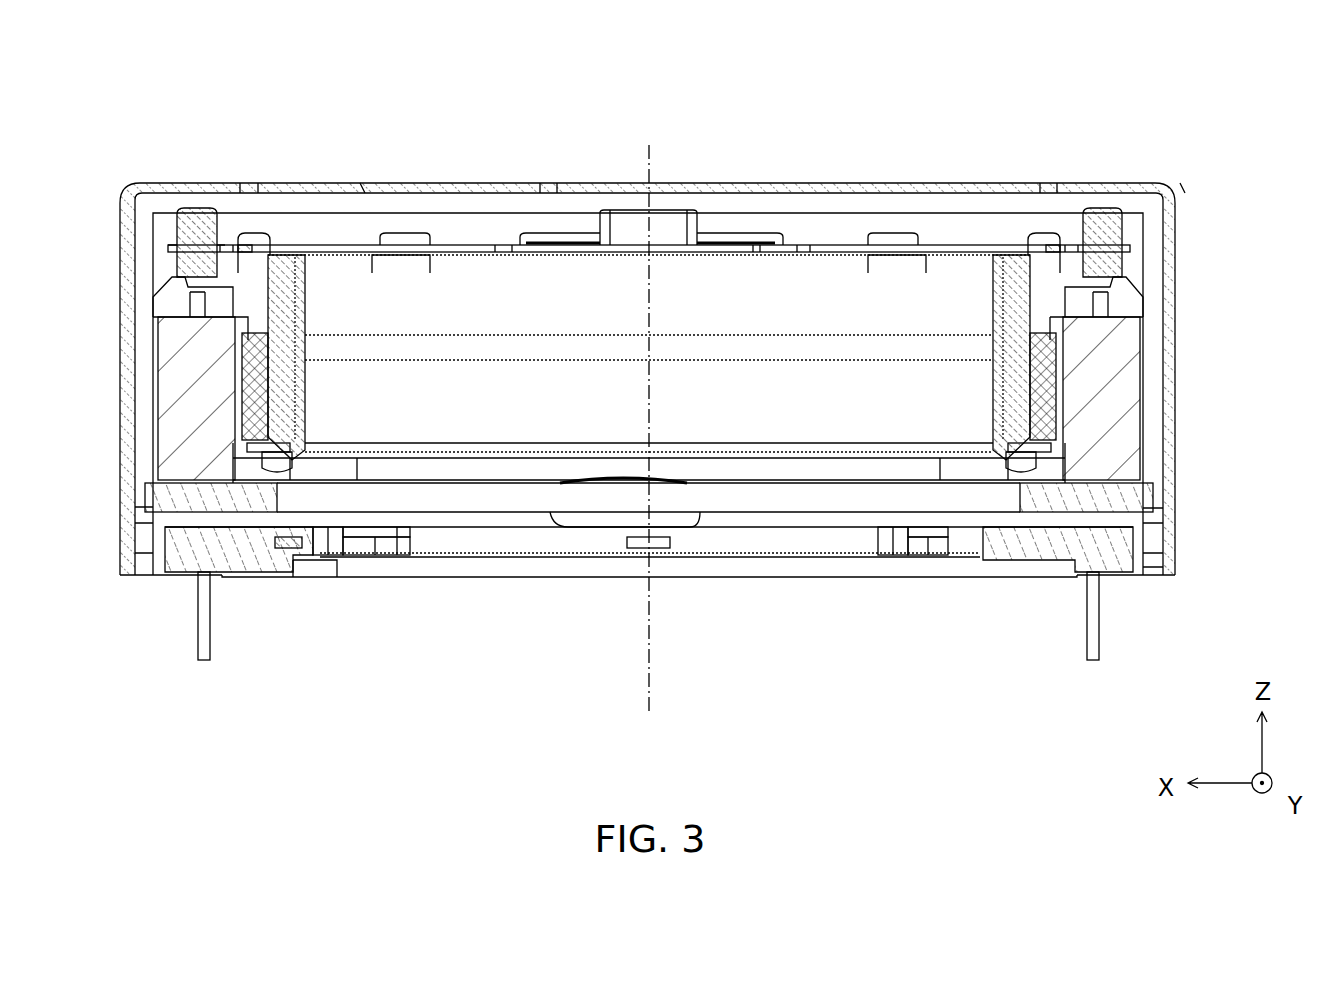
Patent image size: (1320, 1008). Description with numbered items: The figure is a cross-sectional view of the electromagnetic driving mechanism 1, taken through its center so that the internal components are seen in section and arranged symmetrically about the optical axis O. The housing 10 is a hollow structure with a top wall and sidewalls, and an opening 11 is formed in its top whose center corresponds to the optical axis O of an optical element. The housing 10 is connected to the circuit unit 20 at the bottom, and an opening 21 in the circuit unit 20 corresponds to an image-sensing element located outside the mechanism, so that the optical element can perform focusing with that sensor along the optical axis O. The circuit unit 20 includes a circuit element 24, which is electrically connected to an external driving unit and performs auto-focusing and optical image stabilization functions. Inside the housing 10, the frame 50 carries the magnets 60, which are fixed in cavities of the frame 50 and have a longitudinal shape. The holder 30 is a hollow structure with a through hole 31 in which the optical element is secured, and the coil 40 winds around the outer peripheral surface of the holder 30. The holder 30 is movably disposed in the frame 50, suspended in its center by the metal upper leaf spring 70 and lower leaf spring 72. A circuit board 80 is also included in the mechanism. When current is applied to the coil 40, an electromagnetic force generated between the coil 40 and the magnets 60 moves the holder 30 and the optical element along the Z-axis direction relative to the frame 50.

The electromagnetic driving mechanism 1 is at (39, 95).
The housing 10 is at (1175, 243).
The opening 11 is at (762, 185).
The circuit unit 20 is at (175, 545).
The opening 21 is at (815, 540).
The circuit element 24 is at (285, 550).
The holder 30 is at (286, 272).
The through hole 31 is at (840, 292).
The coil 40 is at (250, 392).
The frame 50 is at (205, 232).
The magnets 60 is at (180, 452).
The upper leaf spring 70 is at (445, 247).
The lower leaf spring 72 is at (478, 488).
The circuit board 80 is at (160, 497).
The optical axis O is at (649, 413).